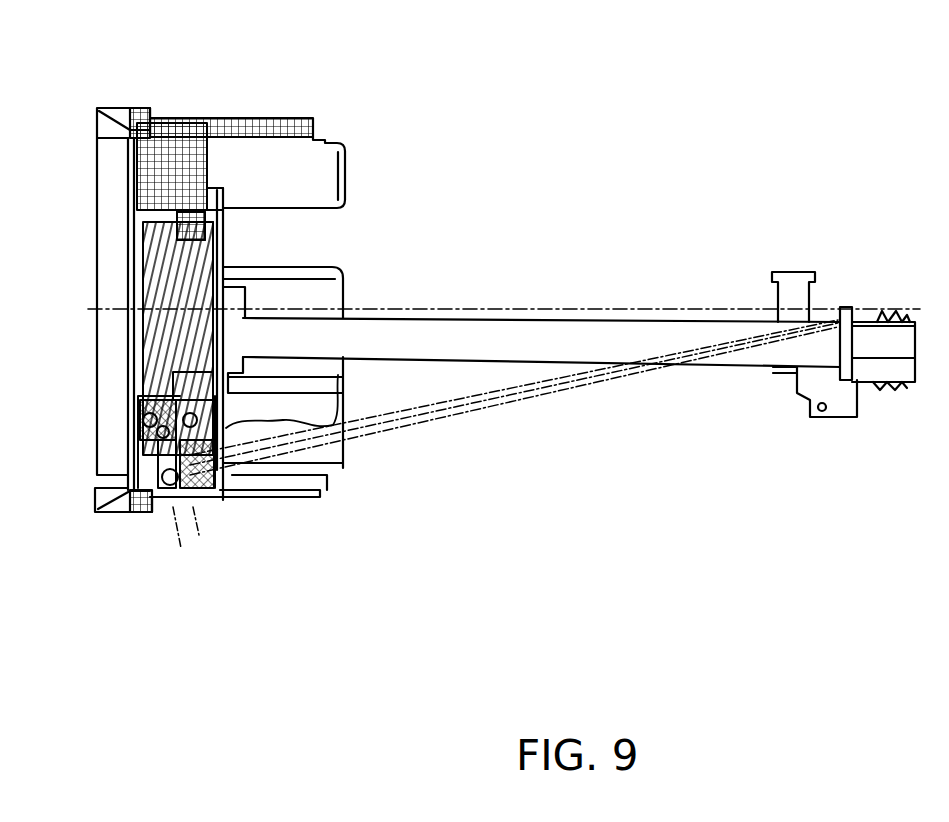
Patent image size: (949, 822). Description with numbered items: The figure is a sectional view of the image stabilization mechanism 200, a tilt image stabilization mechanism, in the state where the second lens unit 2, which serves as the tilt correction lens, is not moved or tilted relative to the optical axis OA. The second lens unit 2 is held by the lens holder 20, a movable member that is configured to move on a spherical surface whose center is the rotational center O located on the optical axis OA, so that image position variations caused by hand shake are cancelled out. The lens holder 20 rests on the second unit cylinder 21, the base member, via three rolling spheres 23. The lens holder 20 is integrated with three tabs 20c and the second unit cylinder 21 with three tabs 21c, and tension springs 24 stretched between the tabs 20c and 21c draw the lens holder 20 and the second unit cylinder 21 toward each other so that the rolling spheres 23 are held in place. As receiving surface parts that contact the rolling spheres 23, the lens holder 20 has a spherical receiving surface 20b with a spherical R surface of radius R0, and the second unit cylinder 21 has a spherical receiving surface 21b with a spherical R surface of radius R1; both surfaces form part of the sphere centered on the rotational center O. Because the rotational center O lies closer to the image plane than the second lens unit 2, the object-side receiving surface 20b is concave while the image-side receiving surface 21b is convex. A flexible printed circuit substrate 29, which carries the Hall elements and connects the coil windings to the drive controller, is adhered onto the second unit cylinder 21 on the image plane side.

The image stabilization mechanism 200 is at (907, 54).
The second lens unit 2 is at (133, 285).
The lens holder 20 is at (137, 213).
The spherical receiving surface 20b is at (166, 508).
The tab 20c is at (122, 418).
The second unit cylinder 21 is at (348, 175).
The spherical receiving surface 21b is at (208, 500).
The tab 21c is at (353, 442).
The rolling sphere 23 is at (188, 507).
The tension spring 24 is at (123, 432).
The flexible printed circuit substrate 29 is at (597, 318).
The optical axis OA is at (516, 292).
The rotational center O is at (875, 298).
The radius R0 is at (168, 118).
The radius R1 is at (216, 60).